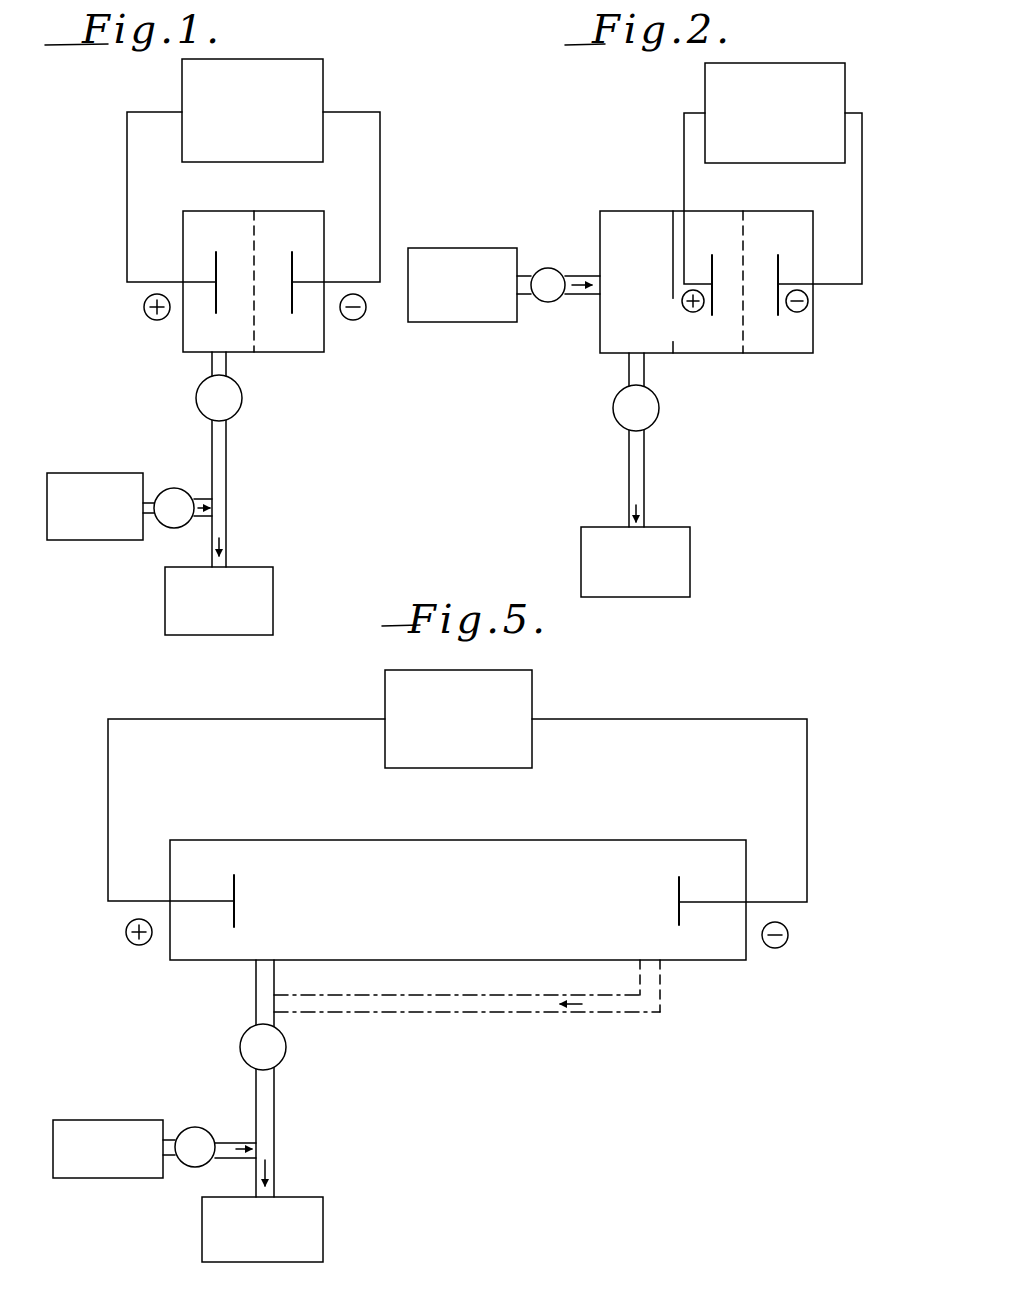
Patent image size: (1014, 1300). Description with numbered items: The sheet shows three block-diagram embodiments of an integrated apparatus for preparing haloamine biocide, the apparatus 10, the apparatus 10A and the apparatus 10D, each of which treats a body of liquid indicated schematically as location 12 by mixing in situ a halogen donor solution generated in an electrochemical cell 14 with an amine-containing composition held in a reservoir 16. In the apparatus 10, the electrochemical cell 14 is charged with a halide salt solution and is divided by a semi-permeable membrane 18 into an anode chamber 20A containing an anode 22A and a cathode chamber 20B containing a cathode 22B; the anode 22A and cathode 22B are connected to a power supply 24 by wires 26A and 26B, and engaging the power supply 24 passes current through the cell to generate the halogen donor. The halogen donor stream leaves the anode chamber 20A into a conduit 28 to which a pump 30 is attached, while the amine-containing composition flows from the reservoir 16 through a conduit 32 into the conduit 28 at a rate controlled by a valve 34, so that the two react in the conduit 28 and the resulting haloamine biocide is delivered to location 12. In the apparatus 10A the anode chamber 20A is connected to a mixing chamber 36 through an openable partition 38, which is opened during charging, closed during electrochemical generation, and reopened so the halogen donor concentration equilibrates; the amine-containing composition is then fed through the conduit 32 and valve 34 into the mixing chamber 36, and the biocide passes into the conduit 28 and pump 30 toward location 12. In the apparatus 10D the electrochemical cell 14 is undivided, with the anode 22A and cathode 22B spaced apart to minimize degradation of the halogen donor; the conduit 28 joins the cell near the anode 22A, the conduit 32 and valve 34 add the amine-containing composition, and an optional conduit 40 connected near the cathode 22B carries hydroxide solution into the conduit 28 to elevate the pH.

In FIG. 1, the apparatus 10 is at (376, 85).
In FIG. 2, the apparatus 10A is at (775, 49).
In FIG. 5, the apparatus 10D is at (646, 708).
In FIG. 1, the location 12 is at (257, 583).
In FIG. 2, the location 12 is at (672, 542).
In FIG. 5, the location 12 is at (315, 1215).
In FIG. 1, the electrochemical cell 14 is at (231, 216).
In FIG. 2, the electrochemical cell 14 is at (760, 226).
In FIG. 5, the electrochemical cell 14 is at (288, 849).
In FIG. 1, the reservoir 16 is at (80, 483).
In FIG. 2, the reservoir 16 is at (455, 262).
In FIG. 5, the reservoir 16 is at (107, 1133).
In FIG. 1, the semi-permeable membrane 18 is at (254, 320).
In FIG. 2, the semi-permeable membrane 18 is at (745, 322).
In FIG. 1, the anode chamber 20A is at (184, 347).
In FIG. 2, the anode chamber 20A is at (718, 347).
In FIG. 1, the cathode chamber 20B is at (310, 343).
In FIG. 2, the cathode chamber 20B is at (798, 340).
In FIG. 1, the anode 22A is at (216, 264).
In FIG. 2, the anode 22A is at (683, 172).
In FIG. 5, the anode 22A is at (234, 915).
In FIG. 1, the cathode 22B is at (292, 271).
In FIG. 2, the cathode 22B is at (780, 258).
In FIG. 5, the cathode 22B is at (681, 920).
In FIG. 1, the power supply 24 is at (297, 64).
In FIG. 2, the power supply 24 is at (706, 79).
In FIG. 5, the power supply 24 is at (512, 685).
In FIG. 1, the wire 26A is at (127, 199).
In FIG. 2, the wire 26A is at (697, 212).
In FIG. 5, the wire 26A is at (346, 719).
In FIG. 1, the wire 26B is at (380, 176).
In FIG. 2, the wire 26B is at (862, 262).
In FIG. 5, the wire 26B is at (762, 720).
In FIG. 1, the conduit 28 is at (222, 459).
In FIG. 2, the conduit 28 is at (635, 472).
In FIG. 5, the conduit 28 is at (265, 1105).
In FIG. 1, the pump 30 is at (203, 391).
In FIG. 2, the pump 30 is at (613, 398).
In FIG. 5, the pump 30 is at (242, 1043).
In FIG. 2, the conduit 32 is at (582, 298).
In FIG. 5, the conduit 32 is at (222, 1163).
In FIG. 1, the valve 34 is at (174, 491).
In FIG. 2, the valve 34 is at (550, 270).
In FIG. 5, the valve 34 is at (213, 1140).
In FIG. 2, the mixing chamber 36 is at (634, 226).
In FIG. 2, the openable partition 38 is at (670, 320).
In FIG. 5, the conduit 40 is at (493, 1003).